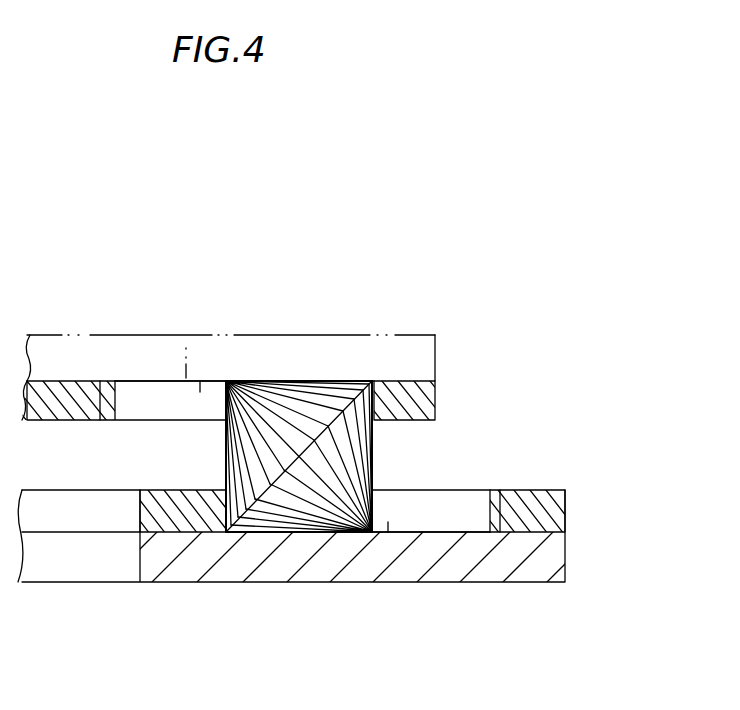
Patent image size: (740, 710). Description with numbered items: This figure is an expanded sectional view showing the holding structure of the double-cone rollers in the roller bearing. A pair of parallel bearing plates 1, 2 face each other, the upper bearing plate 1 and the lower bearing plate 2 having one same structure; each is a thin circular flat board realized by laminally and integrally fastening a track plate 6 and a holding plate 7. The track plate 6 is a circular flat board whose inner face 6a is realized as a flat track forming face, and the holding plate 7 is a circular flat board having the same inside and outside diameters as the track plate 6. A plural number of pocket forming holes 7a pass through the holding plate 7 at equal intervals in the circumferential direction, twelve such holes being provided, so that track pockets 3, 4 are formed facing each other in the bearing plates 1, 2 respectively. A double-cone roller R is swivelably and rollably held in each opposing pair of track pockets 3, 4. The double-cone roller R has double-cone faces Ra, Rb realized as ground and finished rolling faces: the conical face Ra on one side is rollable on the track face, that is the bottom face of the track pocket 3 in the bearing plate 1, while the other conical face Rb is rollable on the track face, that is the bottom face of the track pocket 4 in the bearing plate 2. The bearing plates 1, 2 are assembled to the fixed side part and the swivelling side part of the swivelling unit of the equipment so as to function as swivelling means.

The bearing plate 1 is at (318, 444).
The bearing plate 2 is at (638, 462).
The track pocket 3 is at (163, 403).
The track pocket 4 is at (437, 522).
The track plate 6 is at (437, 352).
The inner face of track plate 6a is at (215, 383).
The holding plate 7 is at (318, 451).
The pocket forming hole 7a is at (115, 393).
The double-cone roller R is at (378, 452).
The conical face Ra is at (330, 397).
The conical face Rb is at (283, 520).